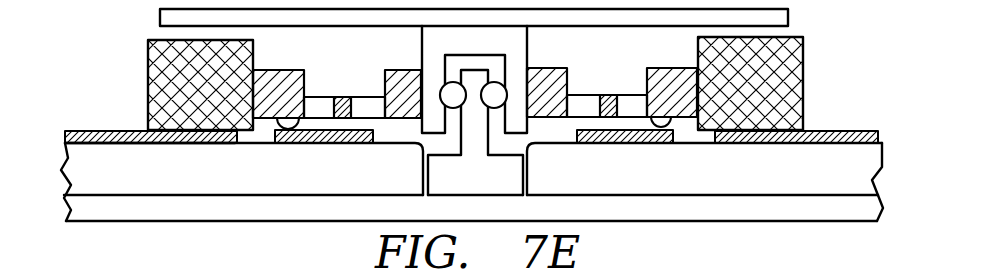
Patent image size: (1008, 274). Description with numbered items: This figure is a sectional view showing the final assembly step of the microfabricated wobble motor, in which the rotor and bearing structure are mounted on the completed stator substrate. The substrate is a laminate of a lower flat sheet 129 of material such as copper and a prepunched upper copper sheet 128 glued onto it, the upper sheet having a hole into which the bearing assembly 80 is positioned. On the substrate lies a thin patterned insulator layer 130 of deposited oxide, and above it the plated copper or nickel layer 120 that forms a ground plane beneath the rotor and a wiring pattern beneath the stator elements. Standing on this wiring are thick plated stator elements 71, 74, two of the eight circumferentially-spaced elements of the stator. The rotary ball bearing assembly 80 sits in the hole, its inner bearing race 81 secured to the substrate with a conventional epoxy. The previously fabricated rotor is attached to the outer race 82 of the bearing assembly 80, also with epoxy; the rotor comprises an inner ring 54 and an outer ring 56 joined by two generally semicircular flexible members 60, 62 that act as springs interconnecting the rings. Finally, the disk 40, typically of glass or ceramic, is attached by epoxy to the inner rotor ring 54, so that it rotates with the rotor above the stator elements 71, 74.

The disk 40 is at (790, 19).
The inner ring 54 is at (413, 104).
The outer ring 56 is at (272, 72).
The flexible member 60 is at (341, 110).
The flexible member 62 is at (608, 107).
The stator element 71 is at (153, 38).
The stator element 74 is at (806, 64).
The ball bearing assembly 80 is at (456, 95).
The inner bearing race 81 is at (507, 98).
The outer race 82 is at (437, 41).
The layer 120 is at (127, 131).
The upper copper sheet 128 is at (88, 178).
The lower flat sheet 129 is at (137, 210).
The insulator layer 130 is at (66, 141).